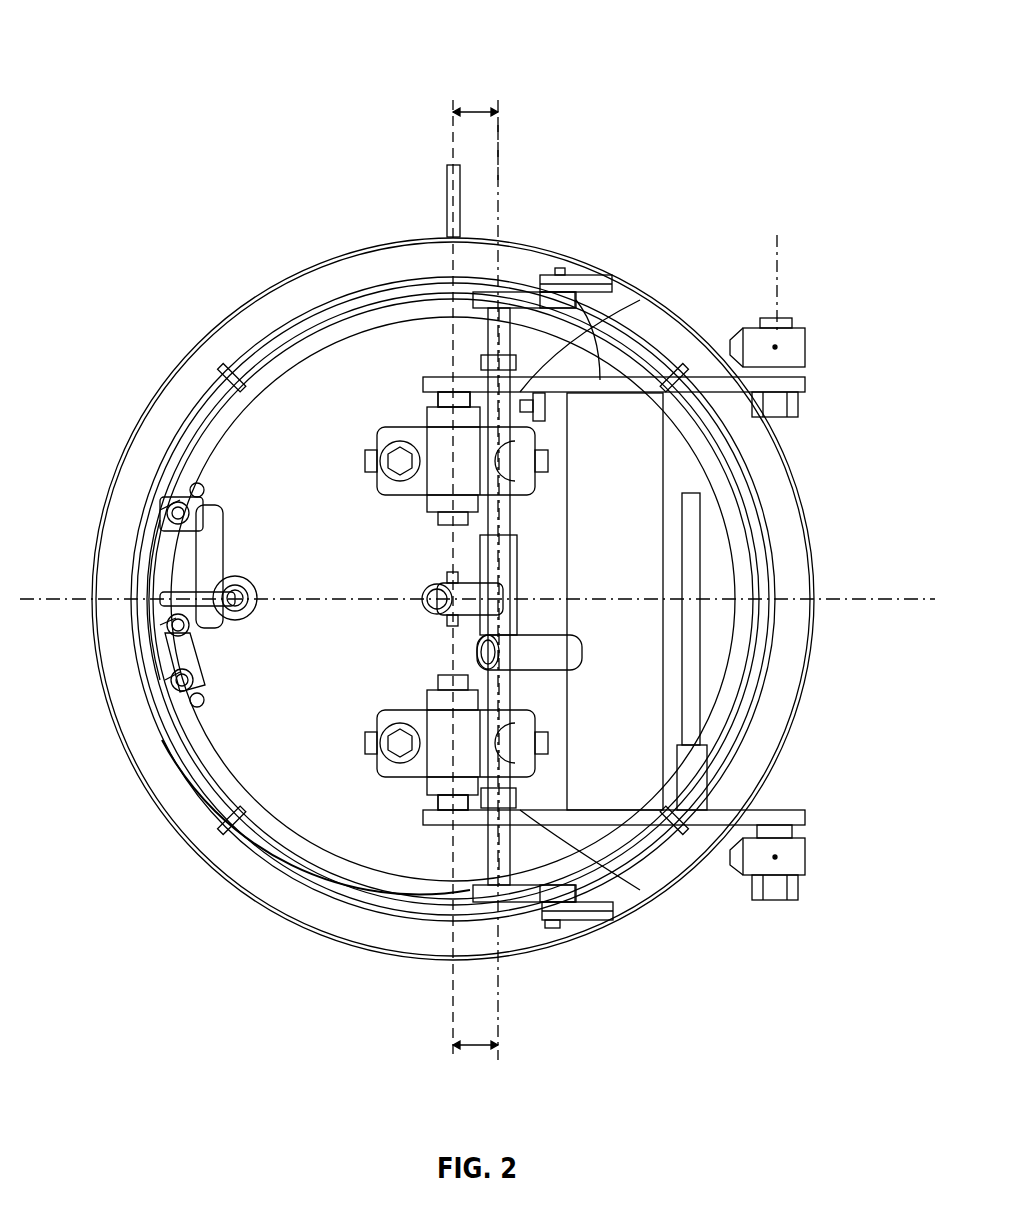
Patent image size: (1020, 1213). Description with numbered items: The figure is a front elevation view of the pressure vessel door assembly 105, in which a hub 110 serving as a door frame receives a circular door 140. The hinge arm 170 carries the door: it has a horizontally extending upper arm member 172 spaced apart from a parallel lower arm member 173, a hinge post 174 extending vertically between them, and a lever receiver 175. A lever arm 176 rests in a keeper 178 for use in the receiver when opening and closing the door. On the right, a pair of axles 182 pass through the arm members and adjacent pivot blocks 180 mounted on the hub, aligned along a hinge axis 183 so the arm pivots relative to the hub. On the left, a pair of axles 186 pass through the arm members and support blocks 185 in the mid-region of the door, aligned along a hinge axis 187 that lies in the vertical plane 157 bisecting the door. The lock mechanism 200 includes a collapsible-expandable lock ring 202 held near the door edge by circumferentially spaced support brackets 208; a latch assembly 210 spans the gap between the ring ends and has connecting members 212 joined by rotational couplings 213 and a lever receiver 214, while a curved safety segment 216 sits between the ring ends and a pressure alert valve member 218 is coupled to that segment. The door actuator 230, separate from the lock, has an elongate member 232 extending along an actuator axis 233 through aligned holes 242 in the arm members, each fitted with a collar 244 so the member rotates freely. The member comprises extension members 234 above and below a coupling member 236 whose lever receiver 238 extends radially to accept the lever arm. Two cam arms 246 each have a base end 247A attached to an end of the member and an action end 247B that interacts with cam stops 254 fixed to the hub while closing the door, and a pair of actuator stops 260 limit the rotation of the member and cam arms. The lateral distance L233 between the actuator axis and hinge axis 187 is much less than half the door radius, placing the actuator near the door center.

The pressure vessel door assembly 105 is at (232, 75).
The hub 110 is at (262, 312).
The door 140 is at (215, 730).
The vertical plane 157 is at (465, 855).
The hinge arm 170 is at (445, 396).
The upper arm member 172 is at (805, 385).
The lower arm member 173 is at (805, 818).
The hinge post 174 is at (630, 570).
The lever receiver 175 is at (555, 655).
The lever arm 176 is at (700, 725).
The keeper 178 is at (712, 760).
The pivot block 180 is at (790, 345).
The axle 182 is at (795, 412).
The hinge axis 183 is at (790, 275).
The support block 185 is at (400, 495).
The axle 186 is at (425, 408).
The hinge axis 187 is at (448, 830).
The lock mechanism 200 is at (228, 548).
The lock ring 202 is at (230, 760).
The support bracket 208 is at (240, 372).
The latch assembly 210 is at (215, 620).
The connecting member 212 is at (205, 515).
The rotational coupling 213 is at (158, 510).
The lever receiver 214 is at (165, 655).
The safety segment 216 is at (162, 592).
The pressure alert valve member 218 is at (252, 590).
The door actuator 230 is at (590, 320).
The elongate member 232 is at (520, 547).
The actuator axis 233 is at (500, 175).
The lateral distance L233 is at (500, 118).
The extension member 234 is at (490, 330).
The coupling member 236 is at (512, 590).
The lever receiver 238 is at (452, 577).
The hole 242 is at (625, 345).
The collar 244 is at (482, 362).
The cam arm 246 is at (548, 300).
The base end 247A is at (480, 300).
The action end 247B is at (600, 292).
The cam stop 254 is at (600, 288).
The actuator stop 260 is at (545, 400).